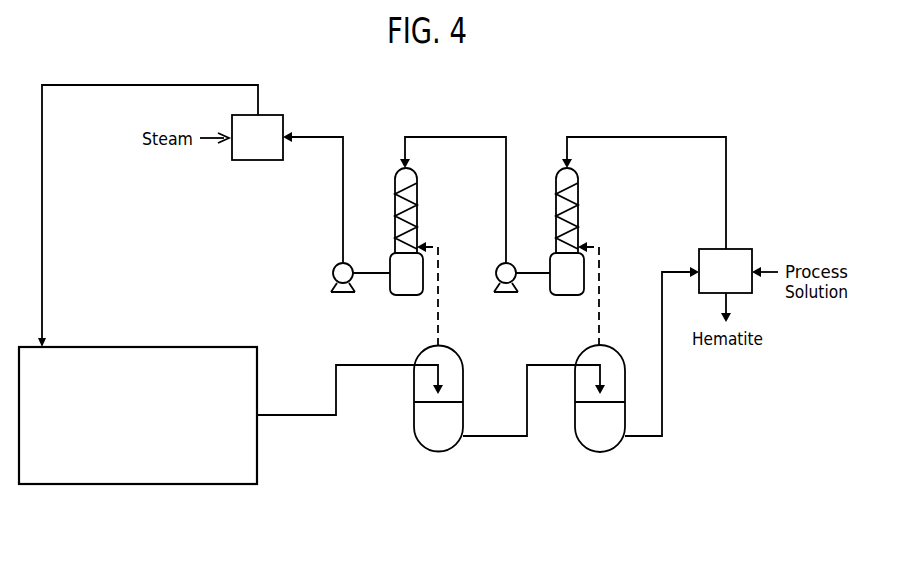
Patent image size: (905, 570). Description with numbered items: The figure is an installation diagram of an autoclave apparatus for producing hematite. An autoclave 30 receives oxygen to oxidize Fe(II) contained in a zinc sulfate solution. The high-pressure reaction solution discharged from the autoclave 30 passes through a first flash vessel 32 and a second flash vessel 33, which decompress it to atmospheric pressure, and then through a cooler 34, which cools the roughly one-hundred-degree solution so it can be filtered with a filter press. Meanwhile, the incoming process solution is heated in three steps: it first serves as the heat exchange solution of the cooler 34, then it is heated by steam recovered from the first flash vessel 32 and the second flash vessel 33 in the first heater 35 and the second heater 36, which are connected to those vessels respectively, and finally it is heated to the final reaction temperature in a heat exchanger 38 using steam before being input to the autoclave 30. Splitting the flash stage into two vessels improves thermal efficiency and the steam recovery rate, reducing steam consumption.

The autoclave 30 is at (127, 484).
The first flash vessel 32 is at (422, 446).
The second flash vessel 33 is at (584, 446).
The cooler 34 is at (740, 249).
The first heater 35 is at (417, 181).
The second heater 36 is at (578, 181).
The heat exchanger 38 is at (273, 115).